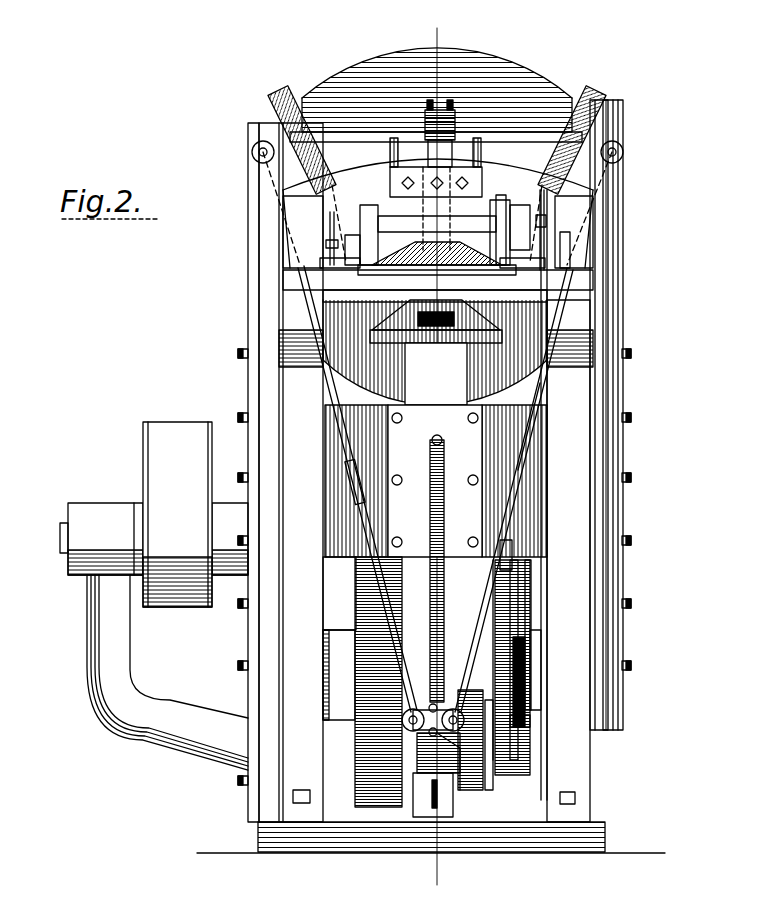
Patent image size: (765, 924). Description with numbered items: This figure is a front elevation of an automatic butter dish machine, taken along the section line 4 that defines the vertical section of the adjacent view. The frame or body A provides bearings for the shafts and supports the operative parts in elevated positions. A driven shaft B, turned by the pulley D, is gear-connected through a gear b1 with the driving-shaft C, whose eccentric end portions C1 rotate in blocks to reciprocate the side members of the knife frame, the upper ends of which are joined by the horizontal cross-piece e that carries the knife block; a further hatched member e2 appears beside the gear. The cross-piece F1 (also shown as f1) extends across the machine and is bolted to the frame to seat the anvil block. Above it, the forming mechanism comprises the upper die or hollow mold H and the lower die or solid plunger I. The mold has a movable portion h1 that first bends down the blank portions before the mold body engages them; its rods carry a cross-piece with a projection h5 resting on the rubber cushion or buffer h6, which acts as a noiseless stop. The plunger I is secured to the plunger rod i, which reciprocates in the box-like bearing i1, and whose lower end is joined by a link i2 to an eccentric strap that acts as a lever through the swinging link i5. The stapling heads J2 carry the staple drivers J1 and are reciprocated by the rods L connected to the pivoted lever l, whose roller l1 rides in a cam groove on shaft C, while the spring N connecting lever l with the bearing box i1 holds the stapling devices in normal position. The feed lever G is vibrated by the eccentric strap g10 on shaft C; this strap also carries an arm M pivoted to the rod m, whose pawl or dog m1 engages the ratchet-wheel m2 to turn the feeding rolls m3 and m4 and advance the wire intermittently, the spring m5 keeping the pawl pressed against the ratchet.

The section line 4- 4 is at (412, 27).
The horizontal cross-piece e is at (338, 86).
The head J2 is at (250, 117).
The rubber cushion or buffer h6 is at (425, 120).
The projection h5 is at (456, 112).
The movable portion of the mold h1 is at (453, 247).
The spring m5 is at (372, 208).
The ratchet-wheel m2 is at (541, 190).
The feeding roll m3 is at (494, 200).
The pawl or dog m1 is at (547, 247).
The feeding roll m4 is at (547, 262).
The rod m is at (527, 587).
The upper die or hollow mold H is at (363, 247).
The cross-piece F1 is at (248, 201).
The cross-piece f1 is at (510, 305).
The lower die or solid plunger I is at (330, 312).
The plunger rod or bar i is at (436, 352).
The box-like bearing i1 is at (436, 481).
The link i2 is at (518, 552).
The swinging link i5 is at (440, 817).
The frame or body A is at (290, 372).
The lever G is at (540, 383).
The staple driver J1 is at (537, 428).
The vertically disposed rods L is at (345, 450).
The spring N is at (430, 482).
The pulley D is at (160, 423).
The driven shaft B is at (60, 540).
The gear b1 is at (380, 795).
The eccentric e e2 is at (337, 672).
The pivoted lever l is at (470, 790).
The roller or projection l1 is at (493, 813).
The driving-shaft C is at (542, 643).
The eccentric pins or reduced end portions C1 is at (487, 722).
The eccentric strap g10 is at (518, 763).
The arm M is at (520, 735).